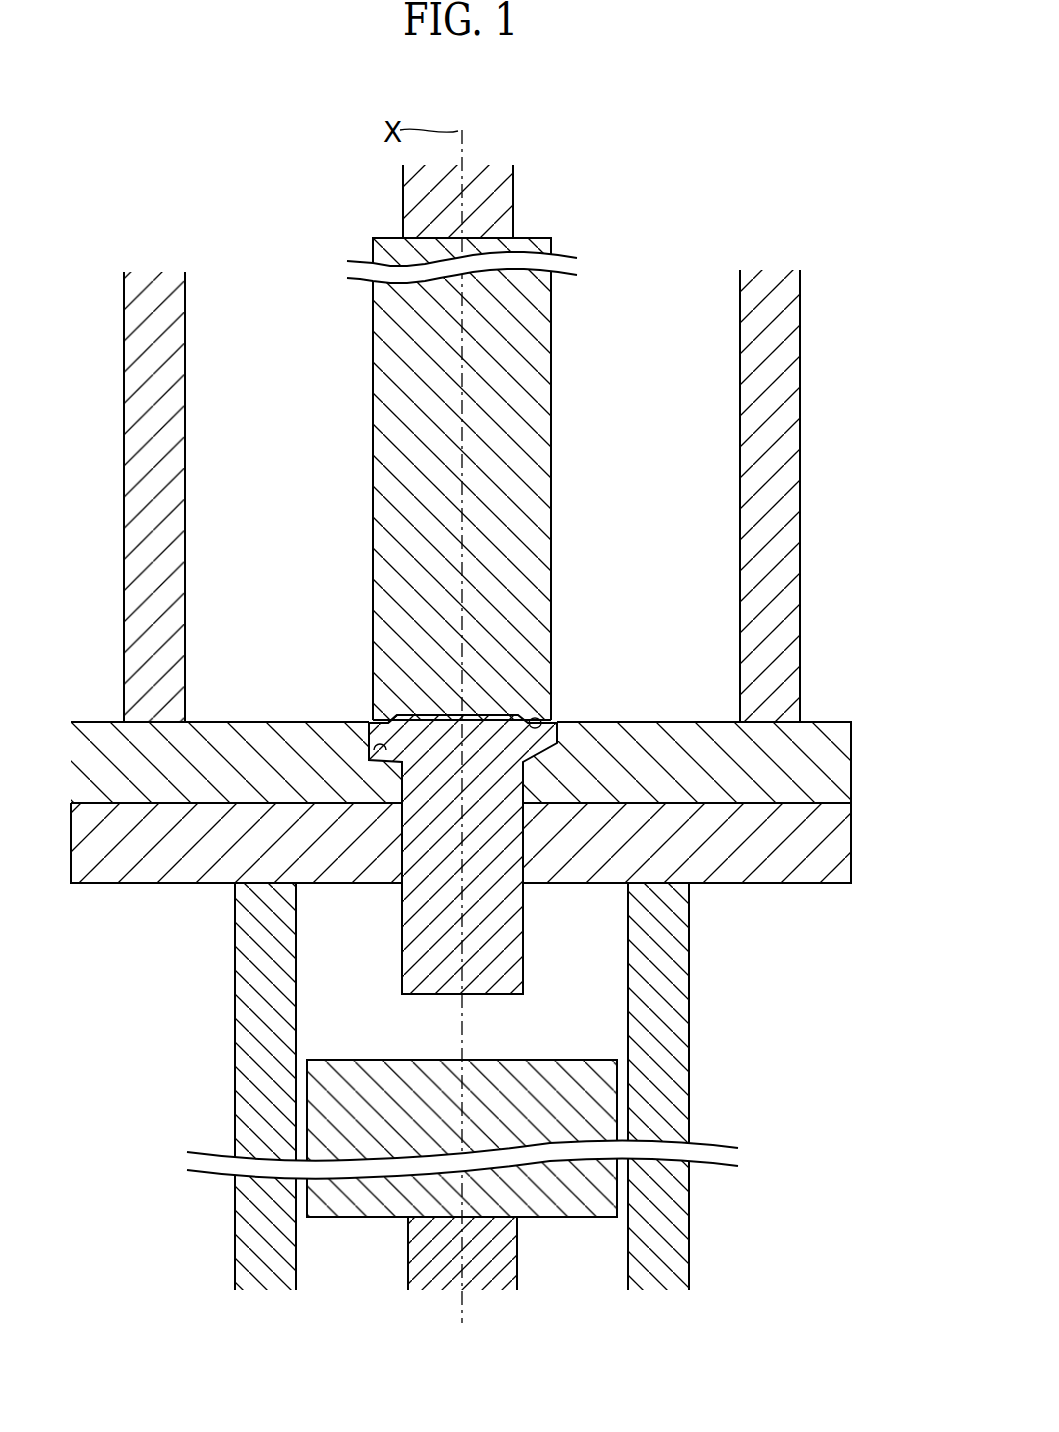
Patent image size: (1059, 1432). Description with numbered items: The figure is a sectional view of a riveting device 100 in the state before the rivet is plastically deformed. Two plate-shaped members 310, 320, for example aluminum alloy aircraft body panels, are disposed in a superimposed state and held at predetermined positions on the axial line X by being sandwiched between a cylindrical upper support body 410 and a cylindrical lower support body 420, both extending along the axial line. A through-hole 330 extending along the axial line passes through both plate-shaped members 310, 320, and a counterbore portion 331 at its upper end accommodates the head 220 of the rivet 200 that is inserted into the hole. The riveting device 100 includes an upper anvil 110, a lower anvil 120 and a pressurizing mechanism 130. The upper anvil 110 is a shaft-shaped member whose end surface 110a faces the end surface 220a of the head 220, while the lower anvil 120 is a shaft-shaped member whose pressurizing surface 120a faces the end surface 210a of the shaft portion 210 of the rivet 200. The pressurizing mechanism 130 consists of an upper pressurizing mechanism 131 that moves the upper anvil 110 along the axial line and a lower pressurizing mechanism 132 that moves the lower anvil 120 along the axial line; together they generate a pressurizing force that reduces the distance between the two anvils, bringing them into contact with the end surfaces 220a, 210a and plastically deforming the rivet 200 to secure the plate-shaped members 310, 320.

The riveting device 100 is at (655, 155).
The upper anvil 110 is at (545, 470).
The end surface 110a is at (531, 721).
The lower anvil 120 is at (608, 1103).
The pressurizing surface 120a is at (600, 1060).
The pressurizing mechanism 130 is at (540, 740).
The upper pressurizing mechanism 131 is at (502, 195).
The lower pressurizing mechanism 132 is at (507, 1265).
The rivet 200 is at (455, 806).
The shaft portion 210 is at (512, 913).
The end surface 210a is at (497, 994).
The head 220 is at (381, 718).
The end surface 220a is at (388, 722).
The plate-shaped member 310 is at (240, 735).
The plate-shaped member 320 is at (127, 884).
The through-hole 330 is at (405, 855).
The counterbore portion 331 is at (378, 746).
The upper support body 410 is at (175, 423).
The lower support body 420 is at (275, 1257).